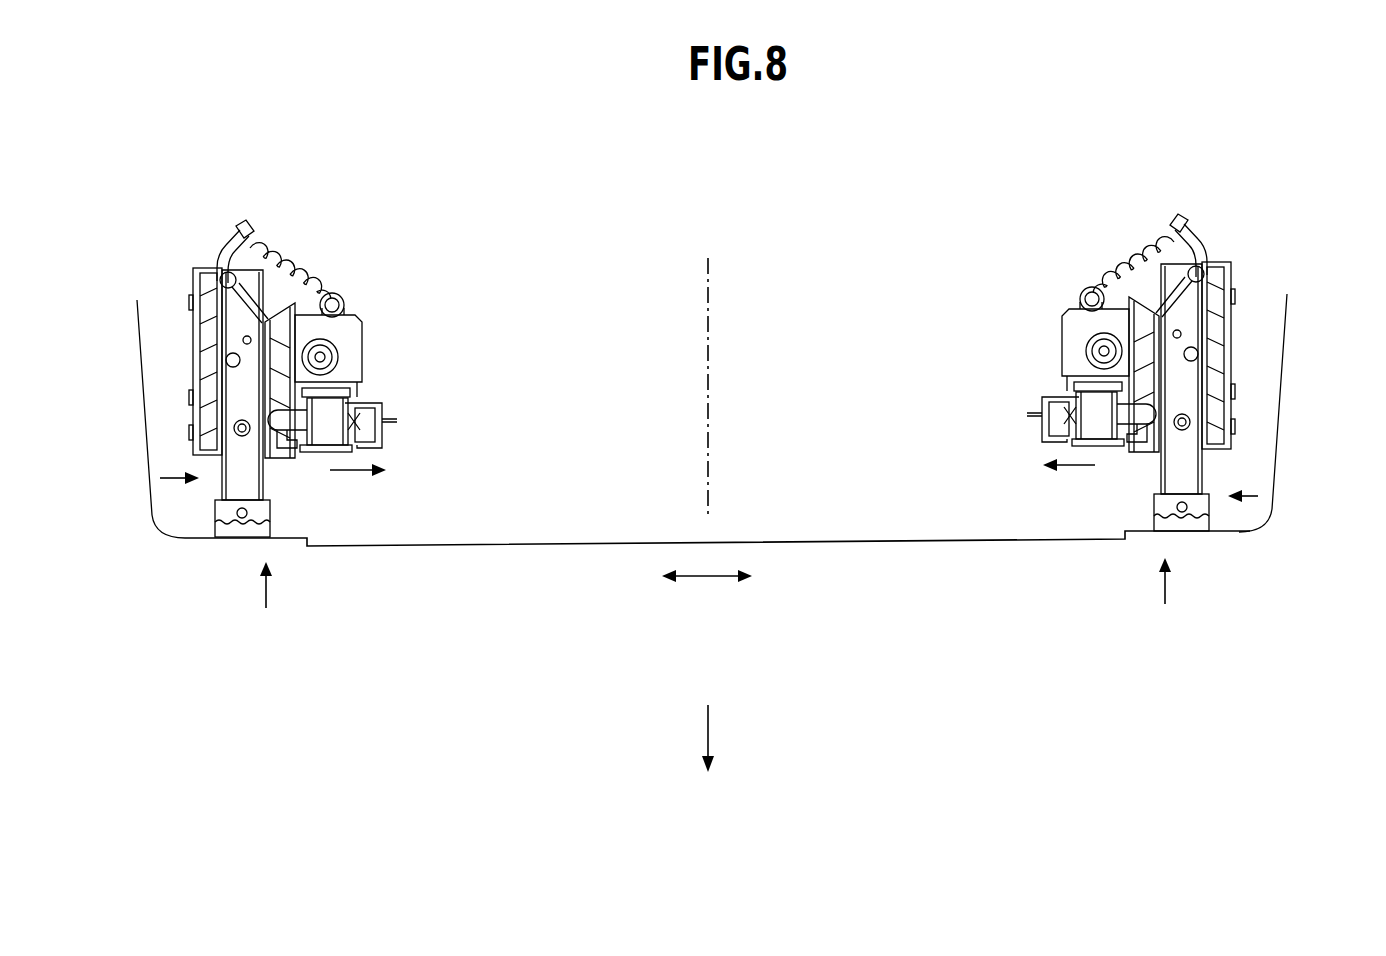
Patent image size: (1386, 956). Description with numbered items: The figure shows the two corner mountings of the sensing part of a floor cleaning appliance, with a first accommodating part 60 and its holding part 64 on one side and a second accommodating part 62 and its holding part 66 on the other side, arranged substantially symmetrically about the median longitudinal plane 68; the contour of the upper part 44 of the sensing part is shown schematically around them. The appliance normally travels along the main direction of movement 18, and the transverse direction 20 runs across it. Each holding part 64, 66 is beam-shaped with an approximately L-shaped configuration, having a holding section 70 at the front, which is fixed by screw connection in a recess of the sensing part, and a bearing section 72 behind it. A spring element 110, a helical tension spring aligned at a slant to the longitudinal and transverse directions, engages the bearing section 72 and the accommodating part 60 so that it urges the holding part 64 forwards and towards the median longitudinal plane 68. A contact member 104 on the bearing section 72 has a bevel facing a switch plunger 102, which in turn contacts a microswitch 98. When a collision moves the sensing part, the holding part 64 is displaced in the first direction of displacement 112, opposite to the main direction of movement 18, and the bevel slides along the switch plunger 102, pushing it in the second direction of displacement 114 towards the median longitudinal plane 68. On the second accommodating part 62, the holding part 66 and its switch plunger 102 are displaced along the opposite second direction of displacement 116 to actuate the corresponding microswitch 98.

The main direction of movement 18 is at (710, 730).
The transverse direction 20 is at (700, 578).
The upper part 44 is at (472, 546).
The accommodating part 60 is at (176, 286).
The accommodating part 62 is at (1250, 252).
The holding part 64 is at (240, 405).
The holding part 66 is at (1185, 478).
The median longitudinal plane 68 is at (708, 430).
The holding section 70 is at (233, 512).
The bearing section 72 is at (245, 382).
The microswitch 98 is at (378, 413).
The switch plunger 102 is at (330, 410).
The contact member 104 is at (280, 465).
The spring element 110 is at (292, 265).
The first direction of displacement 112 is at (266, 596).
The second direction of displacement 114 is at (166, 480).
The second direction of displacement 116 is at (1085, 470).